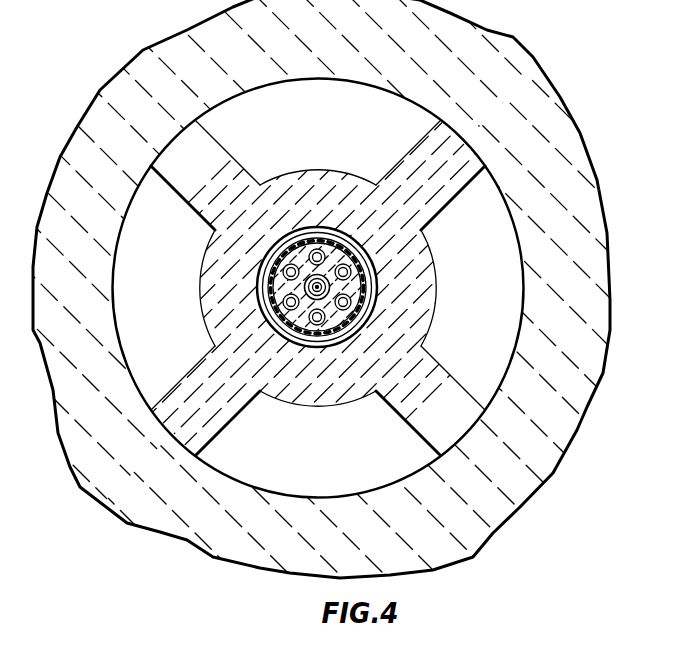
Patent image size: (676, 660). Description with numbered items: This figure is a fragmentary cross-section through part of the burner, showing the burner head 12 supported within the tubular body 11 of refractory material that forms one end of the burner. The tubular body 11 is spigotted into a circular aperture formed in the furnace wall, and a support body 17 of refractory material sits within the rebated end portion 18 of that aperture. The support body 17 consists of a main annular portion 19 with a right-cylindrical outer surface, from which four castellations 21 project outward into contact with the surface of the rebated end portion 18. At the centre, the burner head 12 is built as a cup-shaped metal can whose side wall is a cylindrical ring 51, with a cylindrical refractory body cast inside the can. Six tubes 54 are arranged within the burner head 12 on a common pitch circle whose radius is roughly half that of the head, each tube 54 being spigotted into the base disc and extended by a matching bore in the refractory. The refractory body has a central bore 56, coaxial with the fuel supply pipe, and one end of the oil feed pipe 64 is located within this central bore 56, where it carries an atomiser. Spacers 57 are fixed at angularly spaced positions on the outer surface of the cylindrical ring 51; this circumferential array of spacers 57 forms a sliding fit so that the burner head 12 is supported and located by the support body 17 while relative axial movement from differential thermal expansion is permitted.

The tubular body 11 is at (154, 79).
The burner head 12 is at (374, 293).
The support body 17 is at (212, 316).
The rebated end portion 18 is at (216, 474).
The main annular portion 19 is at (217, 276).
The castellations 21 is at (283, 480).
The cylindrical ring 51 is at (373, 272).
The tubes 54 is at (315, 324).
The central bore 56 is at (305, 288).
The spacers 57 is at (321, 228).
The oil feed pipe 64 is at (311, 275).